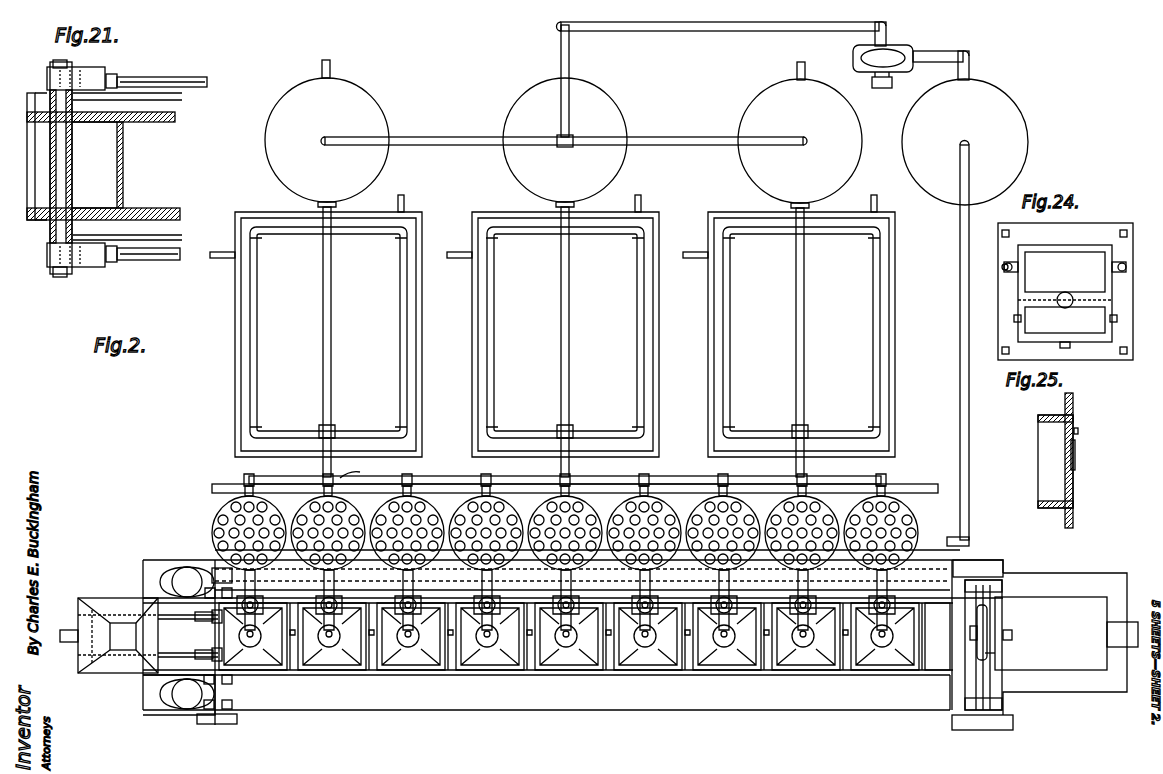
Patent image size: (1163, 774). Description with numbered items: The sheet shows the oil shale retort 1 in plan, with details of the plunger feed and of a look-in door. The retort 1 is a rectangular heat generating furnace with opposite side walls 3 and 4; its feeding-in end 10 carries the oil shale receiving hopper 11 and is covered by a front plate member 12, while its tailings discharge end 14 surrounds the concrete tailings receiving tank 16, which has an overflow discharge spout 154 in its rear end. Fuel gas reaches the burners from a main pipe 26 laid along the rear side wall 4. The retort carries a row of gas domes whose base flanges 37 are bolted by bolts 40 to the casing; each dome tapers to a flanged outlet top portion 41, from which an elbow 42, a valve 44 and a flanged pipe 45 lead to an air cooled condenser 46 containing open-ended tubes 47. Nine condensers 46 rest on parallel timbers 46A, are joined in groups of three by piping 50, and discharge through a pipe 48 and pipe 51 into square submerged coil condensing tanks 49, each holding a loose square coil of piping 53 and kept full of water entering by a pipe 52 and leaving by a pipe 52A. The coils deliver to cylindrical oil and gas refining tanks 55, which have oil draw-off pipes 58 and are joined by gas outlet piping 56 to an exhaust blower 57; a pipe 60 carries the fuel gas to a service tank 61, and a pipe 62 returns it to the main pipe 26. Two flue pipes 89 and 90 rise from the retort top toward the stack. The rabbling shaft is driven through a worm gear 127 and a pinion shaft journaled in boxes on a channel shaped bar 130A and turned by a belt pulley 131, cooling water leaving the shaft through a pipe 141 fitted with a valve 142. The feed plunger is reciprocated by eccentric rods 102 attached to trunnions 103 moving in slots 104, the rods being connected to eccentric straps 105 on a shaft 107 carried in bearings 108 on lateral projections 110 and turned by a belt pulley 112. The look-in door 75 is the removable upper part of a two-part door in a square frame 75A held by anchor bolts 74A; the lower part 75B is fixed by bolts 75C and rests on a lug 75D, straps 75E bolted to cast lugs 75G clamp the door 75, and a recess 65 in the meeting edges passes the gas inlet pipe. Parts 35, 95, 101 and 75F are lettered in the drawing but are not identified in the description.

In FIG. 2, the retort 1 is at (546, 706).
In FIG. 2, the side wall 3 is at (917, 706).
In FIG. 2, the rear side wall 4 is at (988, 566).
In FIG. 2, the feeding-in end 10 is at (112, 546).
In FIG. 2, the oil shale receiving hopper 11 is at (100, 598).
In FIG. 2, the front plate member 12 is at (143, 691).
In FIG. 2, the tailings discharge end 14 is at (1065, 632).
In FIG. 2, the tailings receiving tank 16 is at (1051, 633).
In FIG. 2, the main pipe 26 is at (912, 556).
In FIG. 2, the station 35 is at (426, 672).
In FIG. 2, the outwardly projecting flanges 37 is at (358, 672).
In FIG. 2, the bolts 40 is at (320, 672).
In FIG. 2, the flanged outlet top portion 41 is at (263, 626).
In FIG. 2, the elbow 42 is at (486, 612).
In FIG. 2, the valve 44 is at (318, 606).
In FIG. 2, the pipe 45 is at (256, 575).
In FIG. 2, the air cooled condenser 46 is at (213, 516).
In FIG. 2, the parallel timbers 46A is at (918, 484).
In FIG. 2, the tubes 47 is at (213, 533).
In FIG. 2, the pipe 48 is at (355, 468).
In FIG. 2, the submerged coil condensing tank 49 is at (235, 366).
In FIG. 2, the piping 50 is at (290, 476).
In FIG. 2, the pipe 51 is at (323, 466).
In FIG. 2, the pipe 52 is at (223, 258).
In FIG. 2, the pipe 52A is at (404, 203).
In FIG. 2, the coil of piping 53 is at (253, 326).
In FIG. 2, the oil and gas refining tank 55 is at (563, 143).
In FIG. 2, the gas outlet pipe 56 is at (572, 50).
In FIG. 2, the exhaust fan or blower 57 is at (860, 60).
In FIG. 2, the oil drawing-off pipe 58 is at (322, 66).
In FIG. 2, the pipe 60 is at (938, 52).
In FIG. 2, the service tank 61 is at (965, 142).
In FIG. 2, the pipe 62 is at (960, 331).
In FIG. 24, the recess 65 is at (1058, 299).
In FIG. 25, the recess 65 is at (1070, 468).
In FIG. 24, the anchor bolts 74A is at (1002, 232).
In FIG. 24, the look-in door 75 is at (1065, 293).
In FIG. 25, the look-in door 75 is at (1074, 443).
In FIG. 24, the square frame 75A is at (1065, 291).
In FIG. 25, the square frame 75A is at (1073, 398).
In FIG. 24, the lower part 75B is at (1065, 320).
In FIG. 25, the lower part 75B is at (1074, 482).
In FIG. 24, the bolts 75C is at (1118, 340).
In FIG. 24, the lug 75D is at (1067, 345).
In FIG. 25, the lug 75D is at (1074, 506).
In FIG. 24, the straps 75E is at (1112, 268).
In FIG. 25, the straps 75E is at (1079, 431).
In FIG. 24, the bolt 75F is at (1004, 265).
In FIG. 24, the lugs 75G is at (1120, 262).
In FIG. 2, the flue pipe 89 is at (184, 712).
In FIG. 2, the flue pipe 90 is at (186, 568).
In FIG. 21, the plate 95 is at (140, 122).
In FIG. 21, the cylinder 101 is at (124, 166).
In FIG. 21, the eccentric rods 102 is at (176, 80).
In FIG. 2, the eccentric rods 102 is at (186, 652).
In FIG. 21, the trunnions 103 is at (47, 80).
In FIG. 21, the slots 104 is at (92, 116).
In FIG. 2, the eccentric straps 105 is at (206, 615).
In FIG. 2, the shaft 107 is at (230, 705).
In FIG. 2, the bearings 108 is at (214, 570).
In FIG. 2, the lateral projections 110 is at (234, 681).
In FIG. 2, the belt driven pulley 112 is at (236, 724).
In FIG. 2, the worm gear 127 is at (1004, 645).
In FIG. 2, the channel shaped bar 130A is at (1000, 654).
In FIG. 2, the pulley 131 is at (981, 731).
In FIG. 2, the pipe 141 is at (996, 628).
In FIG. 2, the valve 142 is at (1014, 634).
In FIG. 2, the overflow discharge spout 154 is at (1122, 634).